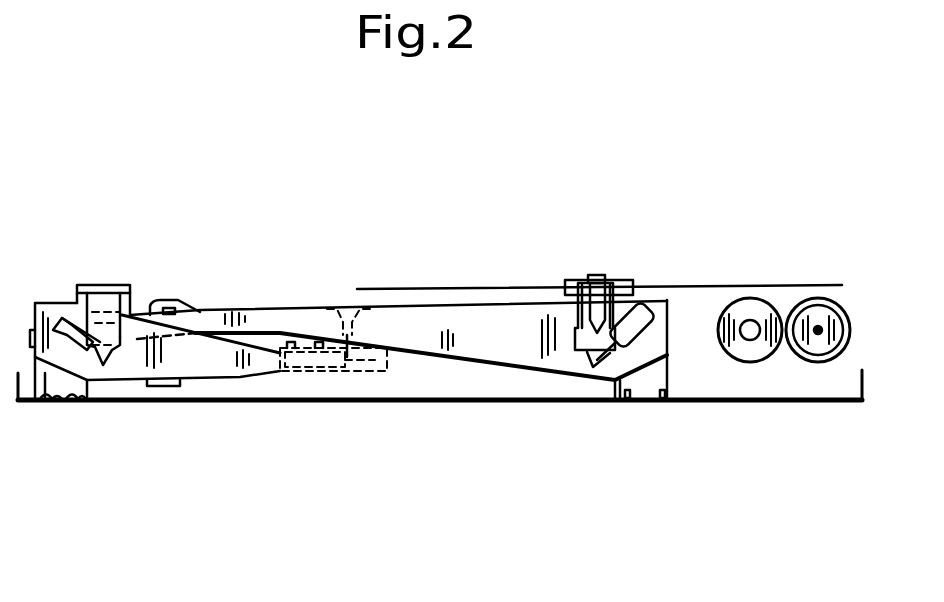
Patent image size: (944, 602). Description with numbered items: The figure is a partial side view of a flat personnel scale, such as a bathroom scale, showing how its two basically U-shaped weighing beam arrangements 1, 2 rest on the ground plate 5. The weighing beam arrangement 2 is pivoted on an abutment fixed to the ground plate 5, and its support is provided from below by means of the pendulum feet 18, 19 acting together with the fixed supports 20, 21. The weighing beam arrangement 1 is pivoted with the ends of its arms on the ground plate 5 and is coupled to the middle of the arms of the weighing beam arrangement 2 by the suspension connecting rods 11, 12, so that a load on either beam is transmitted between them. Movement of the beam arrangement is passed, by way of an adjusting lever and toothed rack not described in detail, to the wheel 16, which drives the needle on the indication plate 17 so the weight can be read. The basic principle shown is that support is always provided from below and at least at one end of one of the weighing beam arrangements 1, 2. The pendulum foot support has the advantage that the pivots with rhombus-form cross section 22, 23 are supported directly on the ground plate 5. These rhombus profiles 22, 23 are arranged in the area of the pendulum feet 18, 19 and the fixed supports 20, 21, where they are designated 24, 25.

The weighing beam arrangement 1 is at (213, 358).
The weighing beam arrangement 2 is at (413, 323).
The ground plate 5 is at (486, 401).
The suspension connecting rod 11 is at (333, 280).
The suspension connecting rod 12 is at (345, 308).
The wheel 16 is at (568, 279).
The indication plate 17 is at (483, 288).
The pendulum foot 18 is at (71, 457).
The pendulum foot 19 is at (47, 401).
The fixed support 20 is at (687, 463).
The fixed support 21 is at (652, 385).
The rhombus-section pivot 22 is at (60, 317).
The rhombus-section pivot 23 is at (103, 367).
The rhombus profile 24 is at (597, 360).
The rhombus profile 25 is at (647, 310).